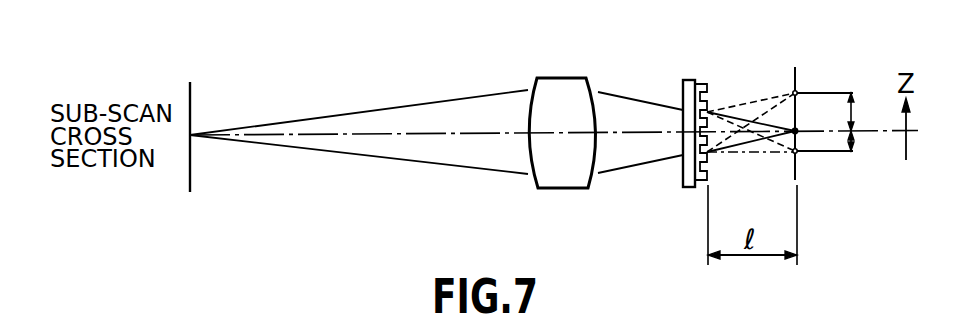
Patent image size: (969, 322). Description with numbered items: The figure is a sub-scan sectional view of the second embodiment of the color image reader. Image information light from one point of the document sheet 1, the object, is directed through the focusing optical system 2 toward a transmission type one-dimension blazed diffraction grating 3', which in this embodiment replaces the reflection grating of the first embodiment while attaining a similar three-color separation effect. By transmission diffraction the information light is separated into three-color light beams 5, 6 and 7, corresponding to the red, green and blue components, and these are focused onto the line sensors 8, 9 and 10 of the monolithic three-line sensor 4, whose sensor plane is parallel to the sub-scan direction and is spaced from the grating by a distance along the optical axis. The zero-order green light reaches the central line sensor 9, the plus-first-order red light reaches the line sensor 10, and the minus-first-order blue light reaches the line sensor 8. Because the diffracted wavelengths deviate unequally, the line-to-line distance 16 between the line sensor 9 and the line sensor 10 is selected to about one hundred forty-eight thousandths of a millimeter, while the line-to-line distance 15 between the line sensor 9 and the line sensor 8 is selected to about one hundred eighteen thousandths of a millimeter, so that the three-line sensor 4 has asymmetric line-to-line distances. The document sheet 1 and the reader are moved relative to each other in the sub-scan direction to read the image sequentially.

The document sheet 1 is at (191, 100).
The focusing optical system 2 is at (563, 78).
The transmission type one-dimension blazed diffraction grating 3' is at (694, 100).
The monolithic 3-line sensor 4 is at (797, 70).
The light beam 5 is at (740, 153).
The light beam 6 is at (768, 143).
The light beam 7 is at (752, 104).
The line sensor 8 is at (799, 153).
The line sensor 9 is at (800, 128).
The line sensor 10 is at (798, 92).
The line-to-line distance 15 is at (843, 148).
The line-to-line distance 16 is at (843, 112).